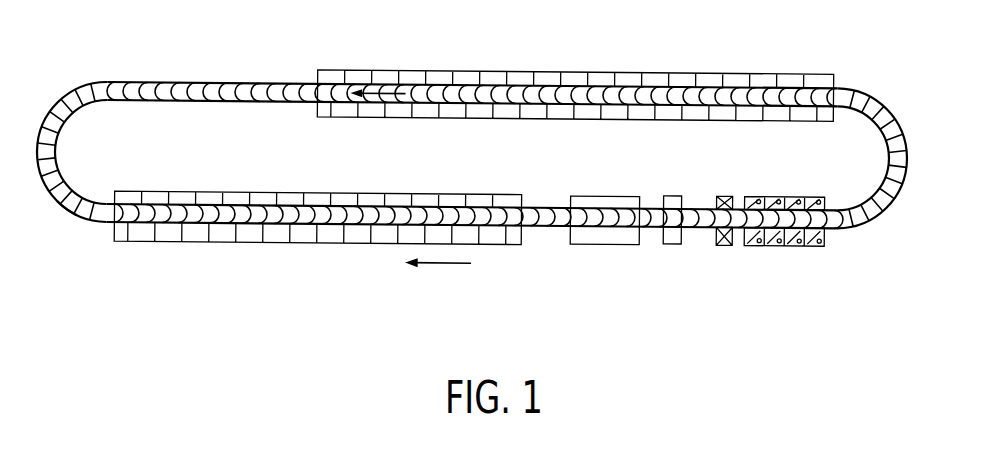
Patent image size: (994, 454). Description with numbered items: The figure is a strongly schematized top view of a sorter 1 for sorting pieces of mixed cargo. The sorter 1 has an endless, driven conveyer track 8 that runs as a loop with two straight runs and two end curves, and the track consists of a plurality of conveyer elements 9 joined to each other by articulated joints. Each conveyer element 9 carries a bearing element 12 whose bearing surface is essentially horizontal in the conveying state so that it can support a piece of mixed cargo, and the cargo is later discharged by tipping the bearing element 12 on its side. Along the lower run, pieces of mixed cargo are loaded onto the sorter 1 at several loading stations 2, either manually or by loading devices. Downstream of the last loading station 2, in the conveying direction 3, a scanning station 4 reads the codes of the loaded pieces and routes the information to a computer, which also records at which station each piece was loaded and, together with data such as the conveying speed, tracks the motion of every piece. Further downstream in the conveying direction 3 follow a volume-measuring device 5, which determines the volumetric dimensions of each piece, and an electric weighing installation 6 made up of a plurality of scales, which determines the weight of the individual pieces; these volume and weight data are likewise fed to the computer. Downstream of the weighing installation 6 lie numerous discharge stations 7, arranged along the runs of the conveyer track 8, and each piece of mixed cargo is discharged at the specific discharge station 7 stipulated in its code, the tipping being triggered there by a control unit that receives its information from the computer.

The sorter 1 is at (729, 46).
The loading stations 2 is at (811, 250).
The conveying direction 3 is at (401, 88).
The scanning station 4 is at (727, 241).
The volume-measuring device 5 is at (676, 190).
The electric weighing installation 6 is at (608, 178).
The discharge stations 7 is at (368, 195).
The conveyer track 8 is at (66, 213).
The conveyer elements 9 is at (59, 170).
The bearing element 12 is at (149, 89).